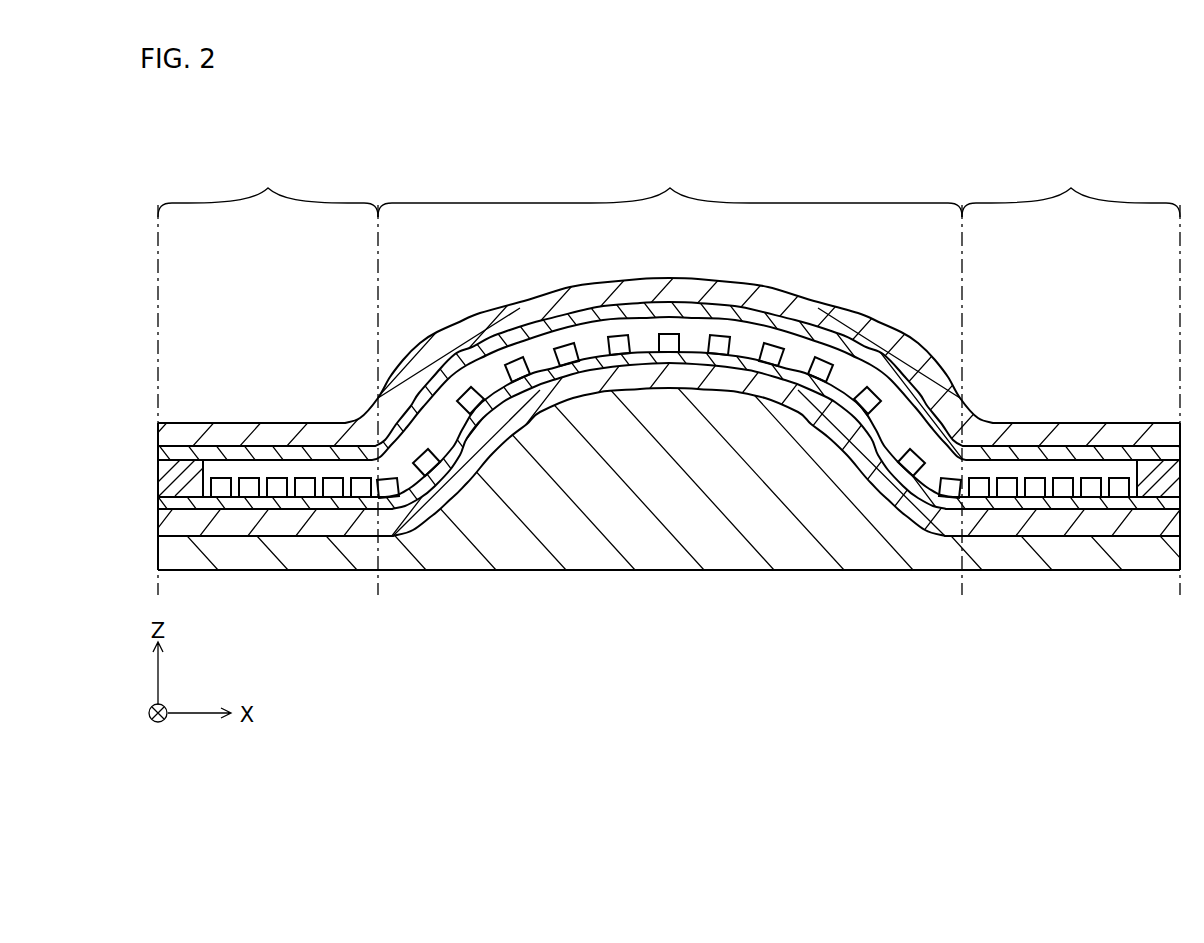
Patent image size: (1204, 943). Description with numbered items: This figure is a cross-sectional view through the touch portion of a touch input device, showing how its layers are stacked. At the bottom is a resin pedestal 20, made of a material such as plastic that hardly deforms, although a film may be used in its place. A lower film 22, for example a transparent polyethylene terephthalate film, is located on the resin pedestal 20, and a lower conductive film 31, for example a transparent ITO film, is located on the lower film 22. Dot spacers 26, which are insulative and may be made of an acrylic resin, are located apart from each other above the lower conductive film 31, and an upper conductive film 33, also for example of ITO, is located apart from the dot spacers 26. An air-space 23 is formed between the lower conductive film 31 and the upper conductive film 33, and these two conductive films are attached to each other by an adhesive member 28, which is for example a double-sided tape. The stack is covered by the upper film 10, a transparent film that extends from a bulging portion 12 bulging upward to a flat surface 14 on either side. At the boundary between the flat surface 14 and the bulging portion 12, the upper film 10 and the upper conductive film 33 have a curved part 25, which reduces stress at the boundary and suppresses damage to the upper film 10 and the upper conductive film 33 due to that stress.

The upper film 10 is at (563, 305).
The bulging portion 12 is at (670, 188).
The flat surface 14 is at (669, 377).
The resin pedestal 20 is at (762, 547).
The lower film 22 is at (693, 388).
The air-space 23 is at (637, 328).
The curved part 25 is at (984, 403).
The dot spacers 26 is at (672, 333).
The adhesive member 28 is at (1158, 478).
The lower conductive film 31 is at (640, 362).
The upper conductive film 33 is at (597, 315).